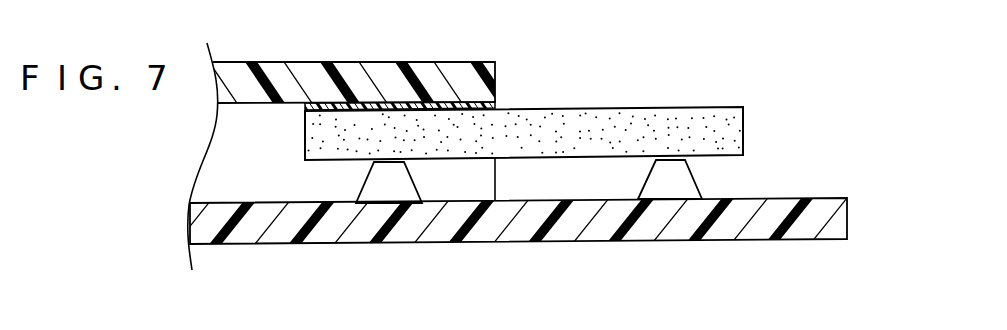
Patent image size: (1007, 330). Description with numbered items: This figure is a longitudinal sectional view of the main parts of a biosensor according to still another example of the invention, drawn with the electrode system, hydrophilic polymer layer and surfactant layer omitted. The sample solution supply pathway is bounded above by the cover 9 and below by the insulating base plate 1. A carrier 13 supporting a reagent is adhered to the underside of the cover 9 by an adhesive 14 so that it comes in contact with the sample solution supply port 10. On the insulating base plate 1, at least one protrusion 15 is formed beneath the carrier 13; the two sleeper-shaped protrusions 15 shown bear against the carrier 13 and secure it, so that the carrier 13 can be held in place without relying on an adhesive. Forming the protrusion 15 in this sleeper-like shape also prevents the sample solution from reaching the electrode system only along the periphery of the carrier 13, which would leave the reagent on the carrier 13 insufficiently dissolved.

The insulating base plate 1 is at (287, 233).
The cover 9 is at (332, 62).
The sample solution supply port 10 is at (473, 193).
The carrier 13 is at (735, 133).
The adhesive 14 is at (497, 103).
The protrusion 15 is at (393, 197).